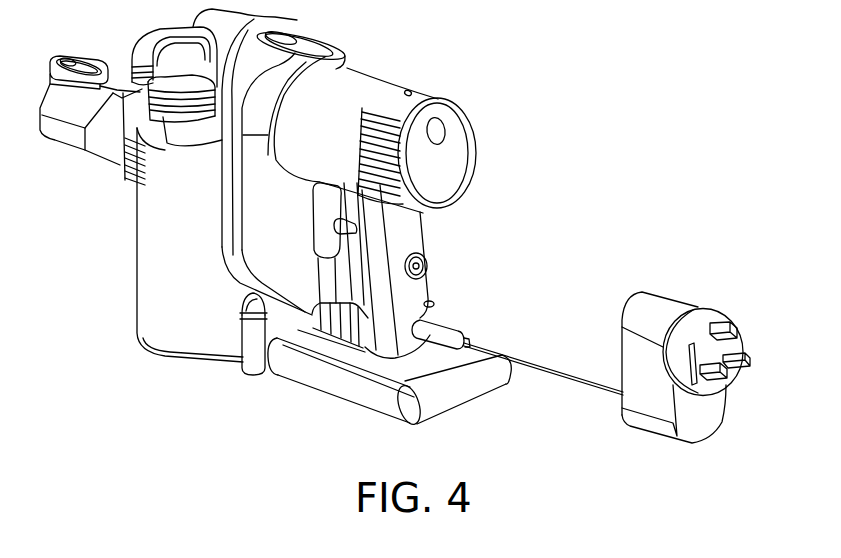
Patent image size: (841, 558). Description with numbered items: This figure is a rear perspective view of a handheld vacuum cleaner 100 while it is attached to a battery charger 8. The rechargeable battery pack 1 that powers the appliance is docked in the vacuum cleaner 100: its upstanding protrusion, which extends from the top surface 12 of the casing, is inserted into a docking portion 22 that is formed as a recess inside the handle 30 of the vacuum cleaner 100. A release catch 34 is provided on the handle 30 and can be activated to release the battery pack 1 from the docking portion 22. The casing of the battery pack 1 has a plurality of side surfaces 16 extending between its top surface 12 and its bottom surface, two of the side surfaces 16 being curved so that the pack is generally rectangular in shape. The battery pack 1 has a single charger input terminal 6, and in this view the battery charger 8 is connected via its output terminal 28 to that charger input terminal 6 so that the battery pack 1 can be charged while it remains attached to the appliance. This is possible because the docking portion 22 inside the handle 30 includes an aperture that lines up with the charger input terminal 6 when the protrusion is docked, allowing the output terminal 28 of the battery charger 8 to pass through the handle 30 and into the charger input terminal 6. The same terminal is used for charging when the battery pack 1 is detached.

The handheld vacuum cleaner 100 is at (331, 202).
The handle 30 is at (413, 238).
The release catch 34 is at (424, 256).
The docking portion 22 is at (428, 302).
The output terminal 28 is at (432, 318).
The battery charger 8 is at (665, 302).
The rechargeable battery pack 1 is at (372, 372).
The side surfaces 16 is at (350, 385).
The charger input terminal 6 is at (403, 363).
The top surface 12 is at (258, 372).